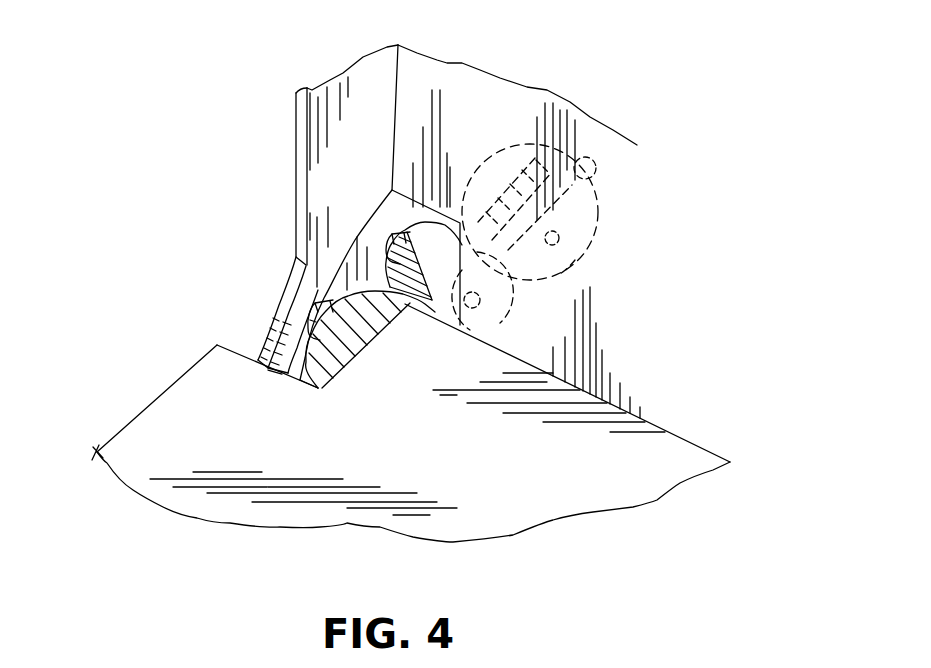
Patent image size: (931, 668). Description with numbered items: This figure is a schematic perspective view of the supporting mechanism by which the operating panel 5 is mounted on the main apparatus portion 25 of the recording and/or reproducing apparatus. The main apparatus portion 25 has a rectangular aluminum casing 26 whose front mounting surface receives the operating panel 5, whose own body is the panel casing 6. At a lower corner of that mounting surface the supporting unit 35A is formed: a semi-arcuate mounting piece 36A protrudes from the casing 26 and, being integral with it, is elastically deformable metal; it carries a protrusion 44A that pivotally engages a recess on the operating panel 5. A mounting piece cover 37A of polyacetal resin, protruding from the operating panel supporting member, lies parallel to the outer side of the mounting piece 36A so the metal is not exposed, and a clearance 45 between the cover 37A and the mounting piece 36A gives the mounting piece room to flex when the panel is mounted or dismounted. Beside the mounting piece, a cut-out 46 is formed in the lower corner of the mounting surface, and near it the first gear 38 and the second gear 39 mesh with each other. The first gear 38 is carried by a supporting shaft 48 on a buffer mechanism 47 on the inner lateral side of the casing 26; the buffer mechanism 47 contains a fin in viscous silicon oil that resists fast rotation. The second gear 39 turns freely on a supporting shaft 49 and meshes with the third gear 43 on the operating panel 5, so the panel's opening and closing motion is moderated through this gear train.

The operating panel 5 is at (105, 502).
The panel casing 6 is at (100, 463).
The main apparatus portion 25 is at (530, 60).
The casing 26 is at (433, 80).
The supporting unit 35A is at (270, 268).
The mounting piece 36A is at (317, 283).
The mounting piece cover 37A is at (260, 305).
The first gear 38 is at (580, 233).
The second gear 39 is at (498, 310).
The third gear 43 is at (345, 350).
The protrusion 44A is at (300, 373).
The clearance 45 is at (255, 330).
The cut-out 46 is at (293, 370).
The buffer mechanism 47 is at (495, 152).
The supporting shaft 48 is at (575, 258).
The supporting shaft 49 is at (400, 235).